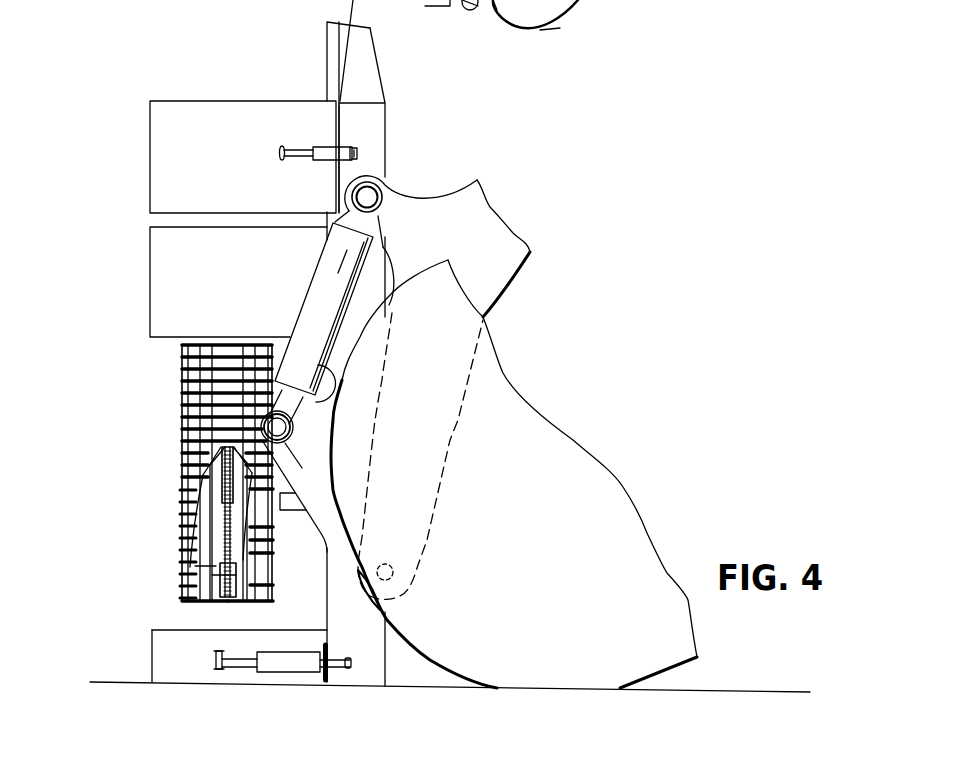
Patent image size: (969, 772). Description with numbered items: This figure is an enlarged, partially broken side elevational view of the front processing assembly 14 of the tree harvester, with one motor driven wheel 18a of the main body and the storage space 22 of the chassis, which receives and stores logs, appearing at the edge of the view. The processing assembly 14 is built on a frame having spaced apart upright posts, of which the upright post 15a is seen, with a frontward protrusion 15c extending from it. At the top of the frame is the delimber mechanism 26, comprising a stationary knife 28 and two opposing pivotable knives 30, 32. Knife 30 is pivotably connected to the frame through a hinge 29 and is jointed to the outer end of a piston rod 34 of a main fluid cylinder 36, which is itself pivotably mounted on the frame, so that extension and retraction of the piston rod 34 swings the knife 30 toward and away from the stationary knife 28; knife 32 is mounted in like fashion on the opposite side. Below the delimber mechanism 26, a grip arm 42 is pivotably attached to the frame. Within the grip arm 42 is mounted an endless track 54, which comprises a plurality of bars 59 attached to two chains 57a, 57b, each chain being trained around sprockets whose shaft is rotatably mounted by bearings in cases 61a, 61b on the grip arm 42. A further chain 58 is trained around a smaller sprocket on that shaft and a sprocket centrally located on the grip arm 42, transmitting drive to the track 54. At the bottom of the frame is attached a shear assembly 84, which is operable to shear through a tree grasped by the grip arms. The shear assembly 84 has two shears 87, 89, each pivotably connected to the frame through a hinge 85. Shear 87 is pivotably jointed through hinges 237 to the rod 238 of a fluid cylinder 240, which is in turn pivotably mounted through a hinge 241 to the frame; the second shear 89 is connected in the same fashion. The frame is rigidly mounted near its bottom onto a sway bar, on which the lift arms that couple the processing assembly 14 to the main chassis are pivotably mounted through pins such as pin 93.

The front processing assembly 14 is at (390, 130).
The upright post 15a is at (373, 163).
The frontward protrusion 15c is at (315, 500).
The motor driven wheel 18a is at (553, 14).
The storage space 22 is at (467, 200).
The delimber mechanism 26 is at (216, 187).
The stationary knife 28 is at (327, 55).
The hinge 29 is at (340, 135).
The pivotable knife 30 is at (163, 153).
The pivotable knife 32 is at (160, 250).
The piston rod 34 is at (292, 150).
The main fluid cylinder 36 is at (326, 147).
The grip arm 42 is at (213, 518).
The endless track 54 is at (219, 487).
The chain 57a is at (183, 537).
The chain 57b is at (267, 527).
The chain 58 is at (222, 512).
The bars 59 is at (182, 392).
The case 61a is at (200, 595).
The case 61b is at (273, 602).
The shear assembly 84 is at (210, 652).
The hinge 85 is at (328, 648).
The shear 87 is at (185, 672).
The shear 89 is at (160, 625).
The pin 93 is at (470, 8).
The hinges 237 is at (220, 655).
The rod 238 is at (243, 668).
The fluid cylinder 240 is at (292, 665).
The hinge 241 is at (343, 660).